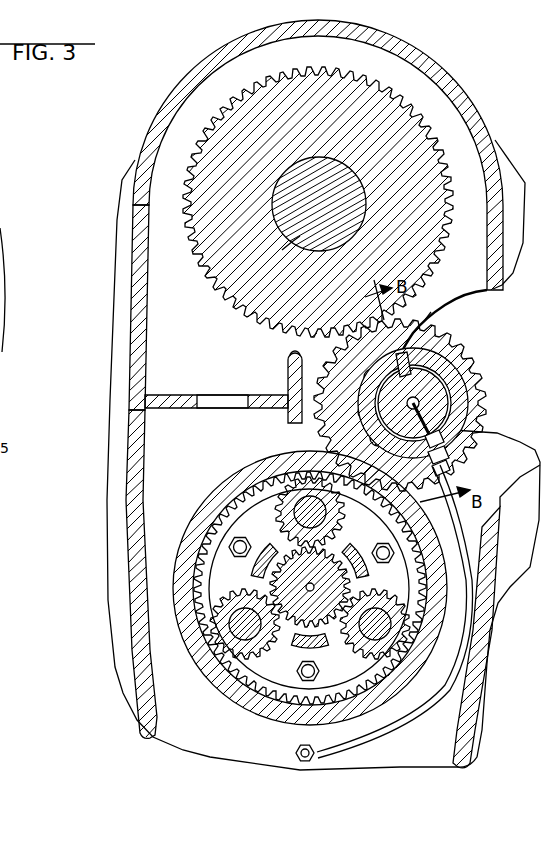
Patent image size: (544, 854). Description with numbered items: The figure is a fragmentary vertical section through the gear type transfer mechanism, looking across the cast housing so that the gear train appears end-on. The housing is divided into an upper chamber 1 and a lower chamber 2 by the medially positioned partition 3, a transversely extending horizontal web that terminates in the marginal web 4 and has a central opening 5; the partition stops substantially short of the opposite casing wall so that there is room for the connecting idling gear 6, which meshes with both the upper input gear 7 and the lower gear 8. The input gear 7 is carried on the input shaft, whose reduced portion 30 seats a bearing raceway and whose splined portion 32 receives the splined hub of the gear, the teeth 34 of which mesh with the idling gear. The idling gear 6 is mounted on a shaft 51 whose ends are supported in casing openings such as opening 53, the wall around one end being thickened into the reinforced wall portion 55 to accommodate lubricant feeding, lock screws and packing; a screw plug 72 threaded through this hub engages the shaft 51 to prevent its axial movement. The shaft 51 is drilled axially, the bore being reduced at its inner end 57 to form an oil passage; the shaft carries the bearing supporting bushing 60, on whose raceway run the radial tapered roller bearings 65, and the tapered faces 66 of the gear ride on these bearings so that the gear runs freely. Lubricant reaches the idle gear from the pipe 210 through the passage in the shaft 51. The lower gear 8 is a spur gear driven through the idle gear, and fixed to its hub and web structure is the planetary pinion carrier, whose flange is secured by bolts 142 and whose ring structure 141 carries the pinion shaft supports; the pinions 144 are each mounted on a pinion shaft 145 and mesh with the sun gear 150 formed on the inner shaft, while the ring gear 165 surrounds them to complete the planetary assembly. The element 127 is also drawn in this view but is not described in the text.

The upper chamber 1 is at (444, 102).
The lower chamber 2 is at (167, 702).
The partition 3 is at (172, 408).
The marginal web 4 is at (296, 384).
The central opening 5 is at (214, 380).
The connecting idling gear 6 is at (424, 323).
The upper input gear 7 is at (422, 154).
The lower gear 8 is at (352, 538).
The reduced portion of input shaft 30 is at (380, 228).
The splined portion 32 is at (300, 236).
The gear teeth 34 is at (291, 356).
The shaft 51 is at (443, 395).
The opening 53 is at (420, 410).
The reinforced wall portion 55 is at (445, 372).
The reduced bore end 57 is at (444, 441).
The bearing supporting bushing 60 is at (367, 397).
The radial tapered roller bearings 65 is at (440, 474).
The tapered faces 66 is at (360, 372).
The screw plug 72 is at (405, 362).
The lever 127 is at (5, 316).
The ring structure 141 is at (263, 548).
The bolt 142 is at (228, 545).
The pinions 144 is at (313, 478).
The pinion shaft 145 is at (295, 518).
The sun gear 150 is at (285, 575).
The ring gear 165 is at (247, 708).
The pipe 210 is at (447, 481).